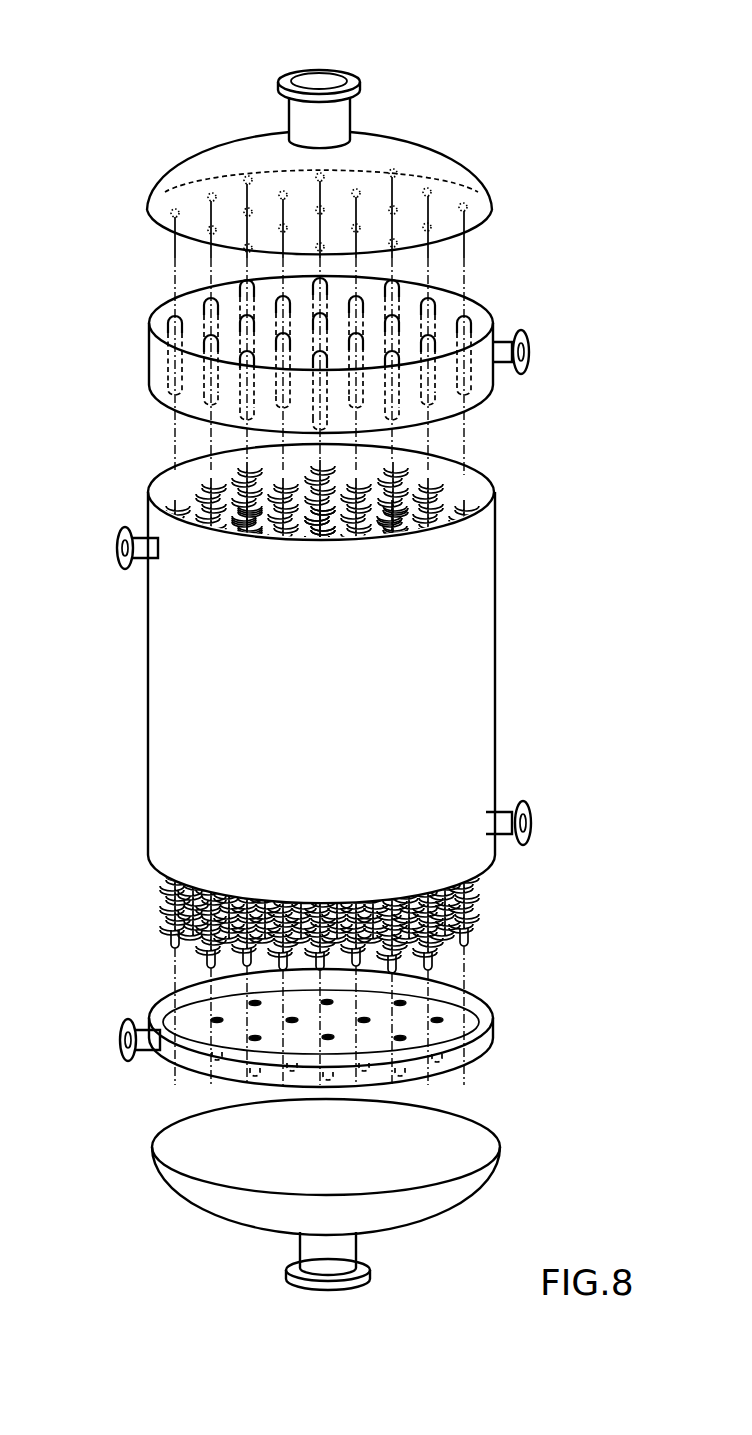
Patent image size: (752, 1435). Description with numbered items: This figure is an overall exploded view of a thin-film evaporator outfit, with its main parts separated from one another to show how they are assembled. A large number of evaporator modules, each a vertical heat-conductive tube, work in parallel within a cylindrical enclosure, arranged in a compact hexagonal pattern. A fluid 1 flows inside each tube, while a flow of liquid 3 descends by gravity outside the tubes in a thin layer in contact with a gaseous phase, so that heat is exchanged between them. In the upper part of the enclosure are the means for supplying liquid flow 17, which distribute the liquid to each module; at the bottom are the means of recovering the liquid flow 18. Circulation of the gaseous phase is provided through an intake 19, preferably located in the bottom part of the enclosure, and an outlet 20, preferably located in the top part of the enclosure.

The fluid 1 is at (318, 12).
The flow of liquid 3 is at (610, 352).
The means for supplying liquid flow 17 is at (500, 312).
The means of recovering the liquid flow 18 is at (170, 1058).
The gaseous phase intake 19 is at (534, 822).
The gaseous phase outlet 20 is at (114, 545).